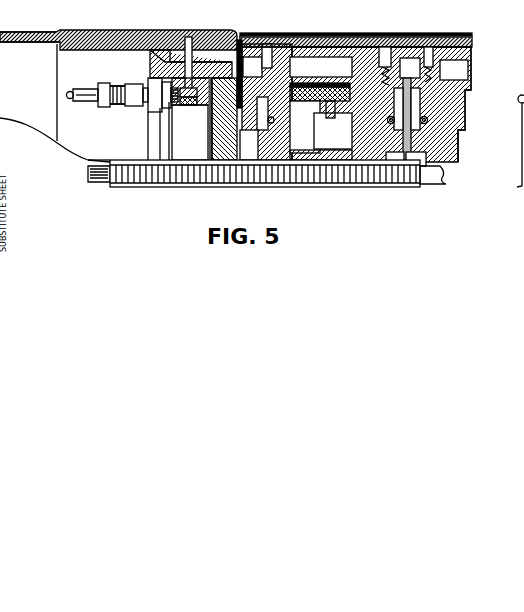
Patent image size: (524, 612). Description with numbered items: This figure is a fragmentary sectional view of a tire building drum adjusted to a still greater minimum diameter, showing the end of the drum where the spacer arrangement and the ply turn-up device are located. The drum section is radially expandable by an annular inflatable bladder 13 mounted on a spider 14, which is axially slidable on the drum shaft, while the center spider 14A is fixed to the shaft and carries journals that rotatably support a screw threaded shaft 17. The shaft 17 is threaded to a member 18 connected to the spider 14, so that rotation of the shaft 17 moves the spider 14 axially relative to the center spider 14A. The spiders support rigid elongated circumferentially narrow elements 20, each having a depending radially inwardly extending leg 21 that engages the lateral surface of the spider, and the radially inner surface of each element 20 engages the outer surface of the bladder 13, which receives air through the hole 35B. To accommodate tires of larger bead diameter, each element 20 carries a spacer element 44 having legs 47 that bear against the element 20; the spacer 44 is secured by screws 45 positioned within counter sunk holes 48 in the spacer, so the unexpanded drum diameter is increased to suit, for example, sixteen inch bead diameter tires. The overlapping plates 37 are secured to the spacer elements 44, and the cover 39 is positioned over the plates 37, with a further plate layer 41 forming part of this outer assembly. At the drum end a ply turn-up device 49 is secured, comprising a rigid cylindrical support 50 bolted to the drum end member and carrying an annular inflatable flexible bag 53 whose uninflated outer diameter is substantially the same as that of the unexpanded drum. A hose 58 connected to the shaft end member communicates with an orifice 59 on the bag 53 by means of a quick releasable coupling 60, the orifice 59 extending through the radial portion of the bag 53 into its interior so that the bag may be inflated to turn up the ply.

The annular inflatable bladder 13 is at (307, 108).
The spider 14 is at (378, 150).
The center spider 14A is at (454, 146).
The screw threaded shaft 17 is at (130, 176).
The threaded member 18 is at (293, 174).
The rigid elongated circumferentially narrow element 20 is at (470, 82).
The depending leg 21 is at (204, 119).
The hole 35B is at (330, 120).
The overlapping plate 37 is at (472, 45).
The cover 39 is at (257, 36).
The plate 41 is at (472, 55).
The spacer element 44 is at (338, 46).
The screw 45 is at (380, 70).
The leg 47 is at (292, 66).
The counter sunk hole 48 is at (388, 54).
The ply turn-up device 49 is at (108, 33).
The rigid cylindrical support 50 is at (120, 50).
The annular inflatable flexible bag 53 is at (60, 44).
The hose 58 is at (78, 88).
The orifice 59 is at (193, 37).
The quick releasable coupling 60 is at (133, 106).